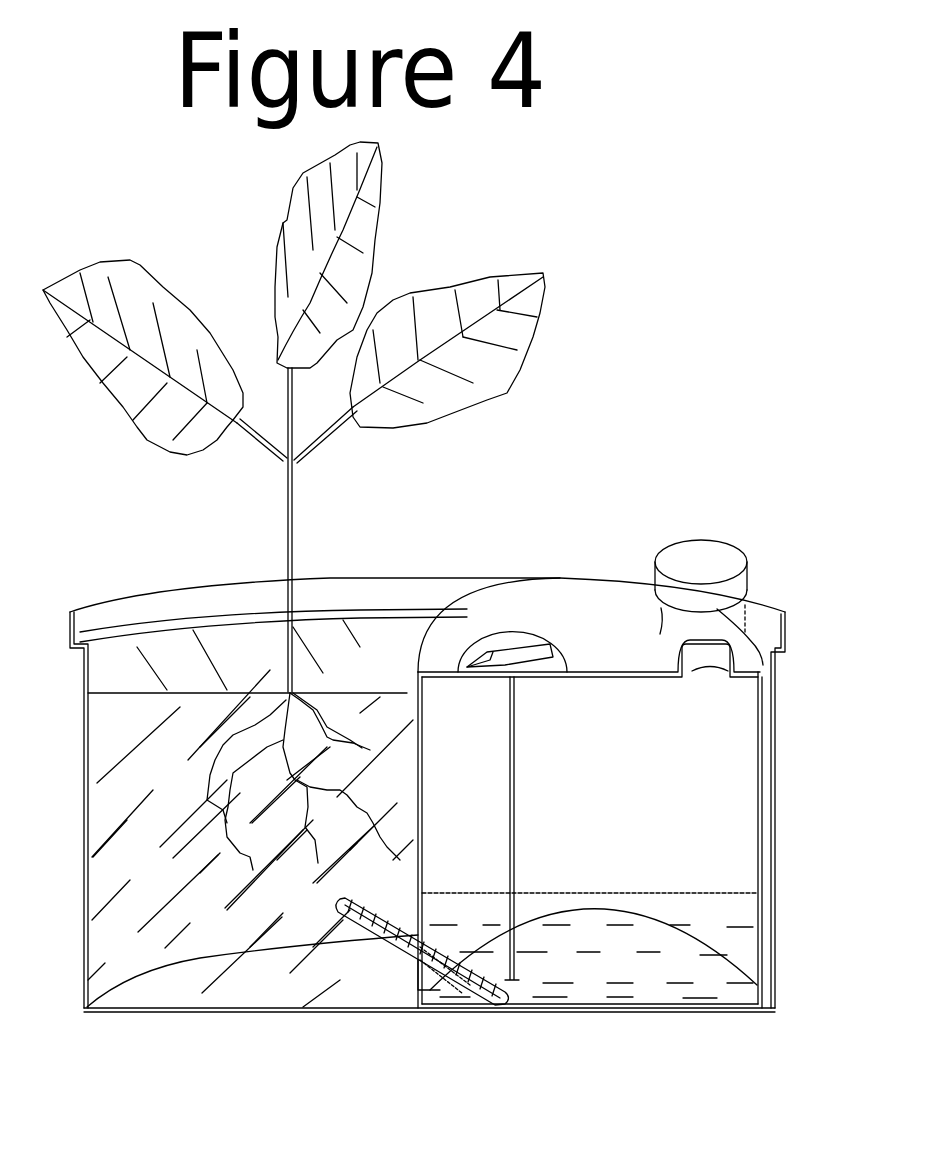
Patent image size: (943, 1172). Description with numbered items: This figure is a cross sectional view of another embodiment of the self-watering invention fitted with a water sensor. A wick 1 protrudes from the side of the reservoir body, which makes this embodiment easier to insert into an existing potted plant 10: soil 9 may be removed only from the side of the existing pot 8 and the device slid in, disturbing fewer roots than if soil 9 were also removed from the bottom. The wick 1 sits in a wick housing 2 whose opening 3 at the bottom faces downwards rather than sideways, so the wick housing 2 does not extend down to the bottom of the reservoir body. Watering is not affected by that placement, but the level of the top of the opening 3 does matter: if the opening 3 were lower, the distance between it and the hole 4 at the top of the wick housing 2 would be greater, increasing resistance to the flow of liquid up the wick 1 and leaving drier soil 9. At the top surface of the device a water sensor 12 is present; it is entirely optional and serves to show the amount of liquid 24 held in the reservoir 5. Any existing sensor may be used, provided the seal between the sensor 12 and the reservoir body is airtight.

The wick 1 is at (332, 975).
The wick housing 2 is at (490, 933).
The opening 3 is at (440, 992).
The hole 4 is at (415, 962).
The reservoir 5 is at (718, 853).
The pot 8 is at (777, 897).
The soil 9 is at (195, 938).
The potted plant 10 is at (545, 327).
The water sensor 12 is at (556, 648).
The liquid 24 is at (653, 963).